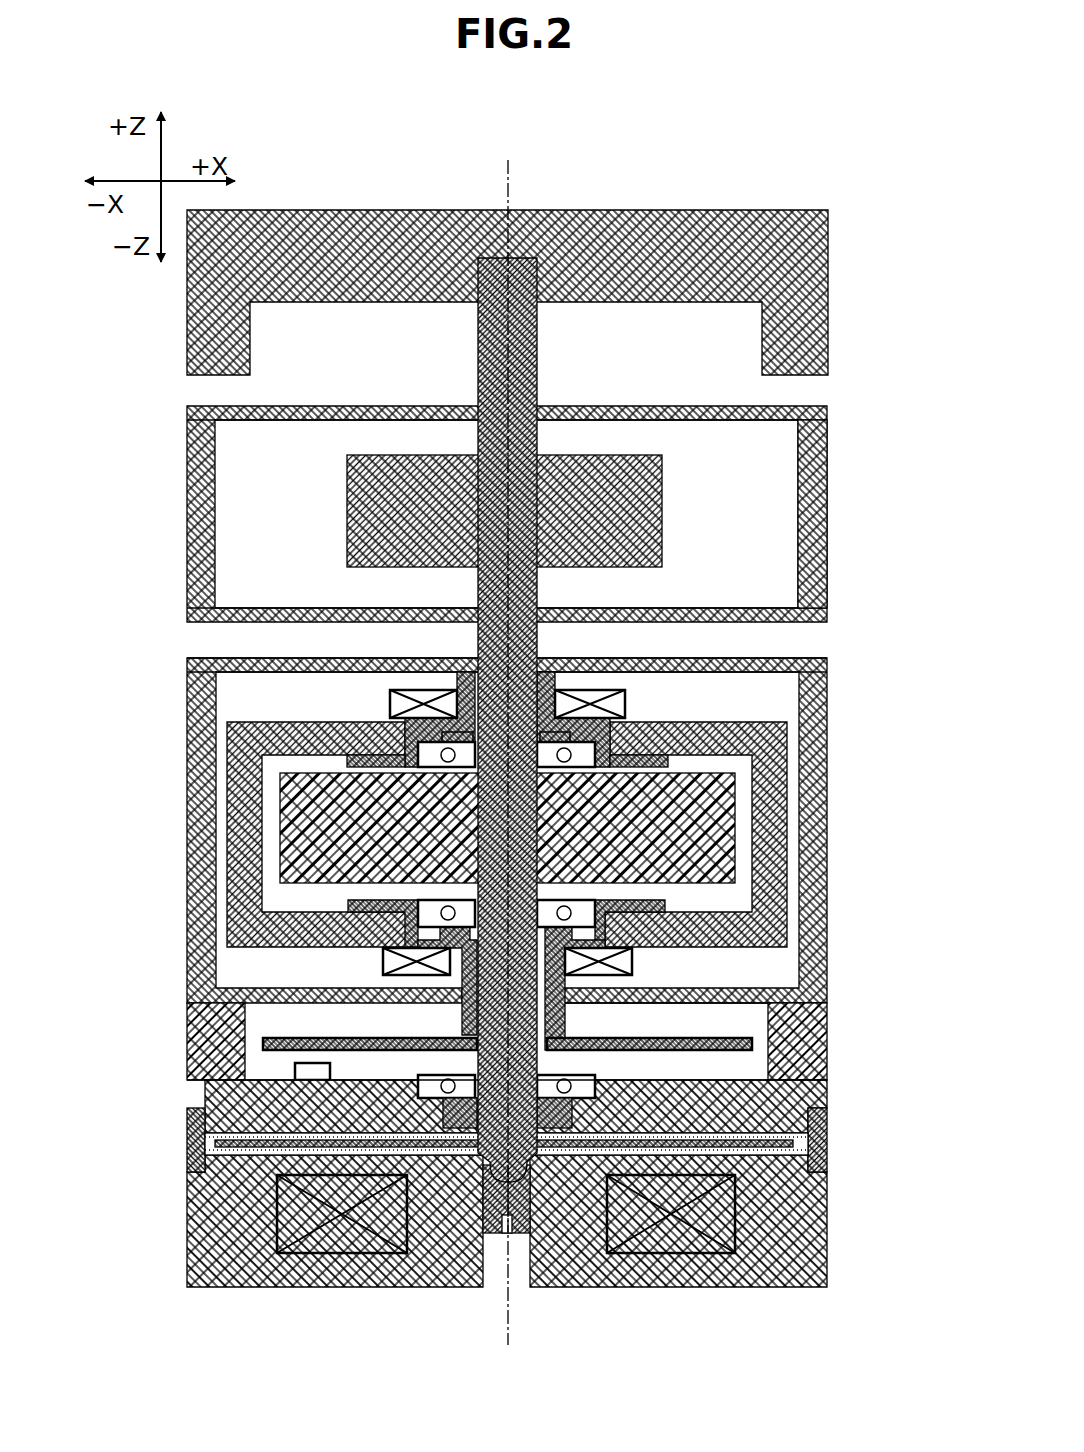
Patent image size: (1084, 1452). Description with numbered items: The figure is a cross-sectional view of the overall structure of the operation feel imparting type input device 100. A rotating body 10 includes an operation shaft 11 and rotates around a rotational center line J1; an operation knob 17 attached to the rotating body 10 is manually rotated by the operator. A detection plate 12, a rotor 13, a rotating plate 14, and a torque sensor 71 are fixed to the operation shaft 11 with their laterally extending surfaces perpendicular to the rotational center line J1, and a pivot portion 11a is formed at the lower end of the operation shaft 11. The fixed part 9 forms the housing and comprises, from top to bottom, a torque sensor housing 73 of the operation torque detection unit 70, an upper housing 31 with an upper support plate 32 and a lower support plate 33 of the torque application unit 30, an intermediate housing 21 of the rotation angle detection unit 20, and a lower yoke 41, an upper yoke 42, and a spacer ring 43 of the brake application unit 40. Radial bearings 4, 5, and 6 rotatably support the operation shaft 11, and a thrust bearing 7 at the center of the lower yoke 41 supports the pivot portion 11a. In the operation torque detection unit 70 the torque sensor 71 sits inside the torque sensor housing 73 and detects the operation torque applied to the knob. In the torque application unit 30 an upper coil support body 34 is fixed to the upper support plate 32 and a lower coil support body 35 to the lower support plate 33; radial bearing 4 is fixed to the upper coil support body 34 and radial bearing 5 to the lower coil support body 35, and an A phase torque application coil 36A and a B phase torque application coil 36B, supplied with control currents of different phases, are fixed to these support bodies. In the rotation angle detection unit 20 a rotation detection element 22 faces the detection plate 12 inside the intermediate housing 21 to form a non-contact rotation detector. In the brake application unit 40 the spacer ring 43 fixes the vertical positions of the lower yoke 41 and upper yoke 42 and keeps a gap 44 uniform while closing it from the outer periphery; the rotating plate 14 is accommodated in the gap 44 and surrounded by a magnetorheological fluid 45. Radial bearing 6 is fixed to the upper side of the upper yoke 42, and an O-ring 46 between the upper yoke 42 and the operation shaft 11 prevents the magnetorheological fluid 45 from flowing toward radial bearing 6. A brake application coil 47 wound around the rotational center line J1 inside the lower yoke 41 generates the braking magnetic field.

The operation feel imparting type input device 100 is at (858, 276).
The operation knob 17 is at (612, 220).
The operation torque detection unit 70 is at (183, 625).
The torque sensor 71 is at (350, 493).
The torque sensor housing 73 is at (800, 503).
The torque application unit 30 is at (499, 838).
The upper housing 31 is at (826, 698).
The upper support plate 32 is at (700, 660).
The lower support plate 33 is at (826, 1000).
The upper coil support body 34 is at (557, 682).
The lower coil support body 35 is at (603, 938).
The A phase torque application coil 36A is at (652, 738).
The B phase torque application coil 36B is at (392, 700).
The radial bearing 4 is at (466, 745).
The radial bearing 5 is at (410, 917).
The rotor 13 is at (720, 829).
The operation shaft 11 is at (480, 380).
The pivot portion 11a is at (513, 1195).
The rotating body 10 is at (555, 352).
The rotational center line J1 is at (495, 182).
The rotation angle detection unit 20 is at (499, 1042).
The intermediate housing 21 is at (826, 1028).
The rotation detection element 22 is at (283, 1070).
The detection plate 12 is at (608, 1030).
The radial bearing 6 is at (442, 1073).
The brake application unit 40 is at (499, 1220).
The lower yoke 41 is at (313, 1287).
The upper yoke 42 is at (826, 1107).
The spacer ring 43 is at (826, 1169).
The gap 44 is at (710, 1085).
The magnetorheological fluid 45 is at (223, 1157).
The O-ring 46 is at (598, 1083).
The brake application coil 47 is at (370, 1243).
The rotating plate 14 is at (702, 1086).
The thrust bearing 7 is at (493, 1287).
The fixed part 9 is at (541, 1220).